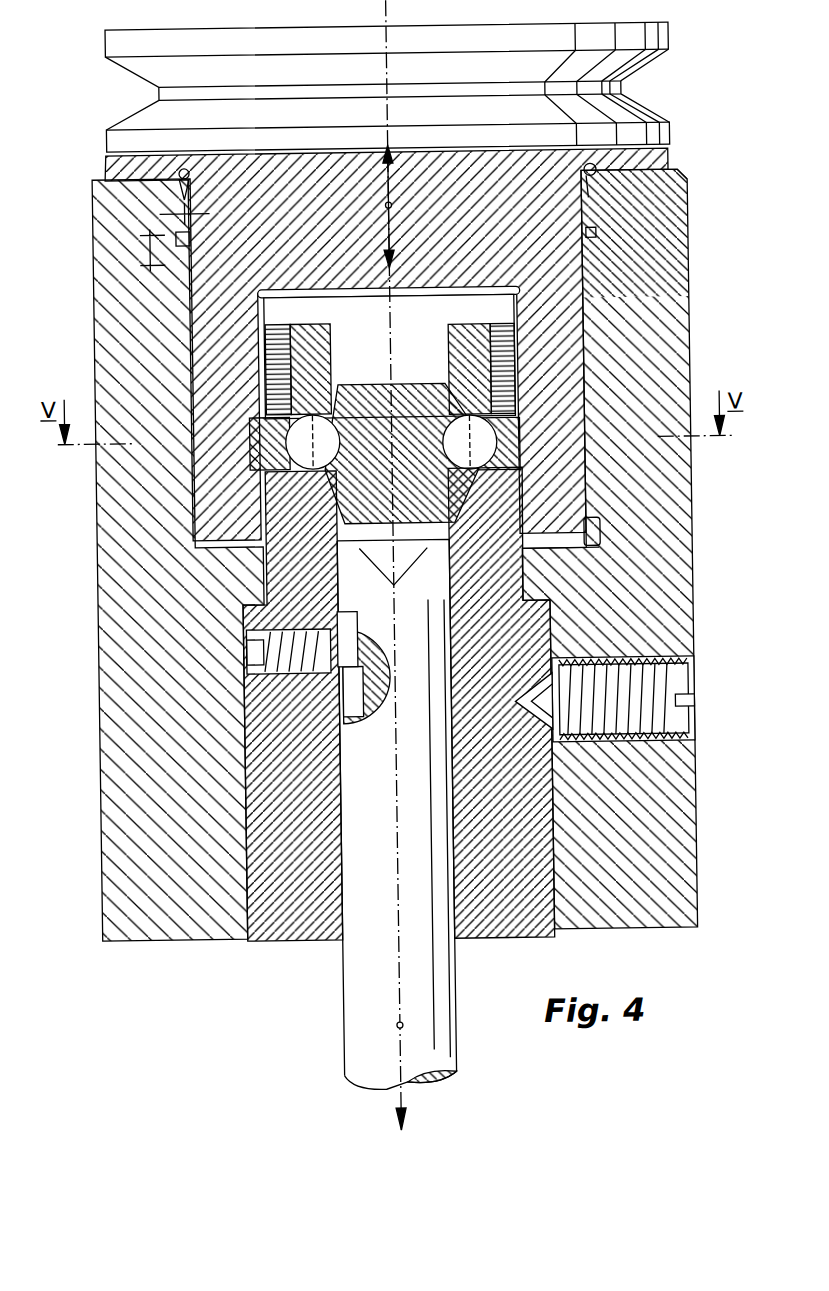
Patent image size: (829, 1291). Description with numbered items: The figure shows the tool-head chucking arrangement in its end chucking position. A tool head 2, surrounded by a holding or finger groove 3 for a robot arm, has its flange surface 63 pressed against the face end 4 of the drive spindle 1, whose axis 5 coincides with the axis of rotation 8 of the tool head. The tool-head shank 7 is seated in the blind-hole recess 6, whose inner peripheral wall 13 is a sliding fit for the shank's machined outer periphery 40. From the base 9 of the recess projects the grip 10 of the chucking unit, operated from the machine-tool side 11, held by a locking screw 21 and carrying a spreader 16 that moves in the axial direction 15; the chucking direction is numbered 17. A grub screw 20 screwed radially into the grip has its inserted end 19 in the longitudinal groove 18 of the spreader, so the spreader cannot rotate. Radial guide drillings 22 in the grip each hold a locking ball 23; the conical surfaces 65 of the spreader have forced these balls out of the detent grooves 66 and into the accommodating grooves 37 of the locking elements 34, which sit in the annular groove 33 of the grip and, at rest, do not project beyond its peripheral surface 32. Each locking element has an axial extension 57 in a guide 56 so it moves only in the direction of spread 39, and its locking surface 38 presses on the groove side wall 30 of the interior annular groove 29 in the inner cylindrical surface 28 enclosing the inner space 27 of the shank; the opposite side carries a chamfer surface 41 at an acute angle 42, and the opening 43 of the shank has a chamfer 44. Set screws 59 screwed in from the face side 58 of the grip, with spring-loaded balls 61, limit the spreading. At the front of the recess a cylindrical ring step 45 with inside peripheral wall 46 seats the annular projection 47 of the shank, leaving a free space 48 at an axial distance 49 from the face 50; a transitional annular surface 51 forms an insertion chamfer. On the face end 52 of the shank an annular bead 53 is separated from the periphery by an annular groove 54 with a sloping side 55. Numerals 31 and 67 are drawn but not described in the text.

The drive spindle 1 is at (682, 252).
The tool head 2 is at (676, 42).
The holding or finger groove 3 is at (655, 91).
The face end of the drive spindle 4 is at (665, 165).
The axis of the drive spindle 5 is at (394, 843).
The recess 6 is at (196, 385).
The inner peripheral wall of the recess 13 is at (162, 374).
The tool-head shank 7 is at (198, 302).
The axis of rotation 8 is at (394, 22).
The base of the recess 9 is at (602, 536).
The grip 10 is at (480, 322).
The machine-tool side 11 is at (260, 987).
The axial direction 15 is at (398, 206).
The spreader 16 is at (446, 985).
The chucking or locking direction 17 is at (410, 1076).
The longitudinal groove 18 is at (362, 690).
The inserted end of the grub screw 19 is at (358, 645).
The grub screw 20 is at (246, 648).
The locking screw 21 is at (688, 686).
The radial guide drillings 22 is at (388, 365).
The locking ball 23 is at (302, 486).
The inner space 27 is at (326, 288).
The inner cylindrical surface 28 is at (300, 288).
The interior annular groove 29 is at (526, 428).
The groove side wall 30 is at (248, 437).
The shaft cone 31 is at (397, 582).
The peripheral surface of the grip 32 is at (258, 507).
The annular groove 33 is at (528, 408).
The locking elements 34 is at (262, 433).
The accommodating groove 37 is at (292, 436).
The locking surfaces 38 is at (526, 466).
The direction of spread 39 is at (256, 455).
The outer periphery of the tool-head shank 40 is at (196, 408).
The chamfer surface 41 is at (266, 408).
The acute angle 42 is at (334, 338).
The opening of the interior space 43 is at (512, 556).
The chamfer 44 is at (520, 522).
The cylindrical ring step 45 is at (196, 186).
The inside peripheral wall of the ring step 46 is at (590, 222).
The annular projection 47 is at (600, 203).
The free space 48 is at (200, 258).
The axial distance 49 is at (155, 254).
The face of the cylinder ring step 50 is at (204, 237).
The transitional annular surface 51 is at (592, 250).
The face end of the tool-head shank 52 is at (560, 550).
The annular bead 53 is at (604, 510).
The annular groove 54 is at (604, 480).
The sloping side of the annular groove 55 is at (604, 456).
The guide 56 is at (262, 500).
The axial extension 57 is at (292, 706).
The face side of the grip 58 is at (456, 322).
The set screws 59 is at (272, 358).
The balls 61 is at (270, 392).
The flange surface 63 is at (690, 182).
The conical surfaces 65 is at (328, 412).
The detent grooves 66 is at (416, 452).
The seal lip 67 is at (585, 178).